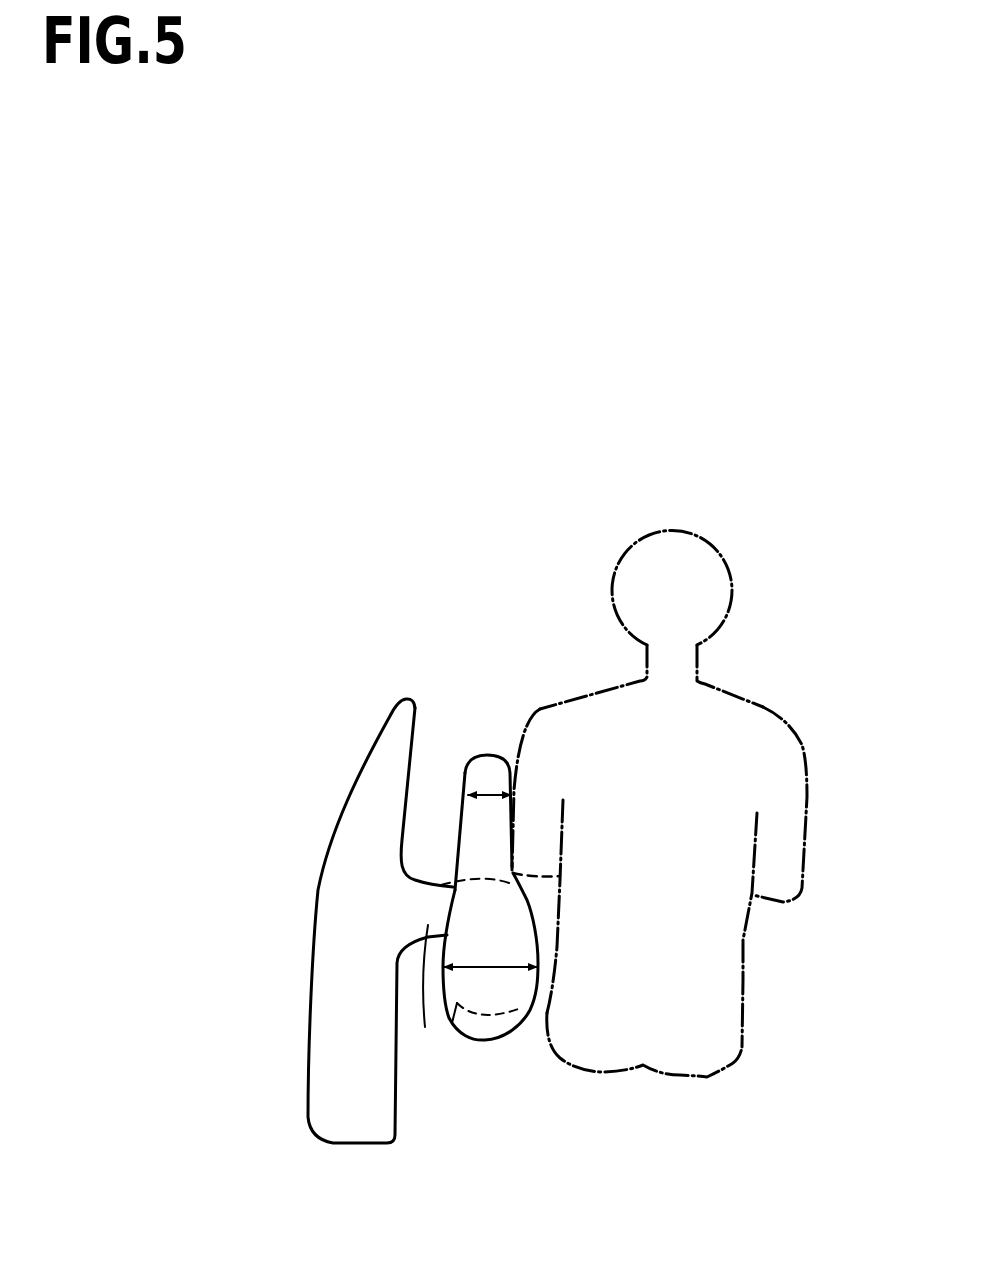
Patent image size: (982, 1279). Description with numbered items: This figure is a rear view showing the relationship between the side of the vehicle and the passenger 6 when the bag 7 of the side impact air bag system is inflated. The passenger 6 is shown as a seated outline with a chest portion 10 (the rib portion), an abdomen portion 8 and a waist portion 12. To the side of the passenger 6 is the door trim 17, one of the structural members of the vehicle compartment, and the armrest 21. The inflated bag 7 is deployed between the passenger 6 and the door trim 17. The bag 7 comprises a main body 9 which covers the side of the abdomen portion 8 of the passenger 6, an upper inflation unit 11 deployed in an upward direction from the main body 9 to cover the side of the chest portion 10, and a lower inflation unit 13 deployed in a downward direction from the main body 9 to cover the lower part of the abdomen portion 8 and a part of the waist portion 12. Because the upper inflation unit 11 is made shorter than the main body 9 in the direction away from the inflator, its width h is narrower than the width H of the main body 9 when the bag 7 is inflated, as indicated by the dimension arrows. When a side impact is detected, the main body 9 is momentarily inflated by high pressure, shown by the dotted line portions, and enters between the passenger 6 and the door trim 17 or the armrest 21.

The passenger 6 is at (700, 803).
The bag 7 is at (480, 889).
The abdomen portion 8 is at (677, 943).
The main body 9 is at (450, 1030).
The chest portion 10 is at (703, 763).
The upper inflation unit 11 is at (492, 757).
The waist portion 12 is at (733, 1063).
The lower inflation unit 13 is at (482, 1033).
The door trim 17 is at (402, 842).
The armrest 21 is at (429, 994).